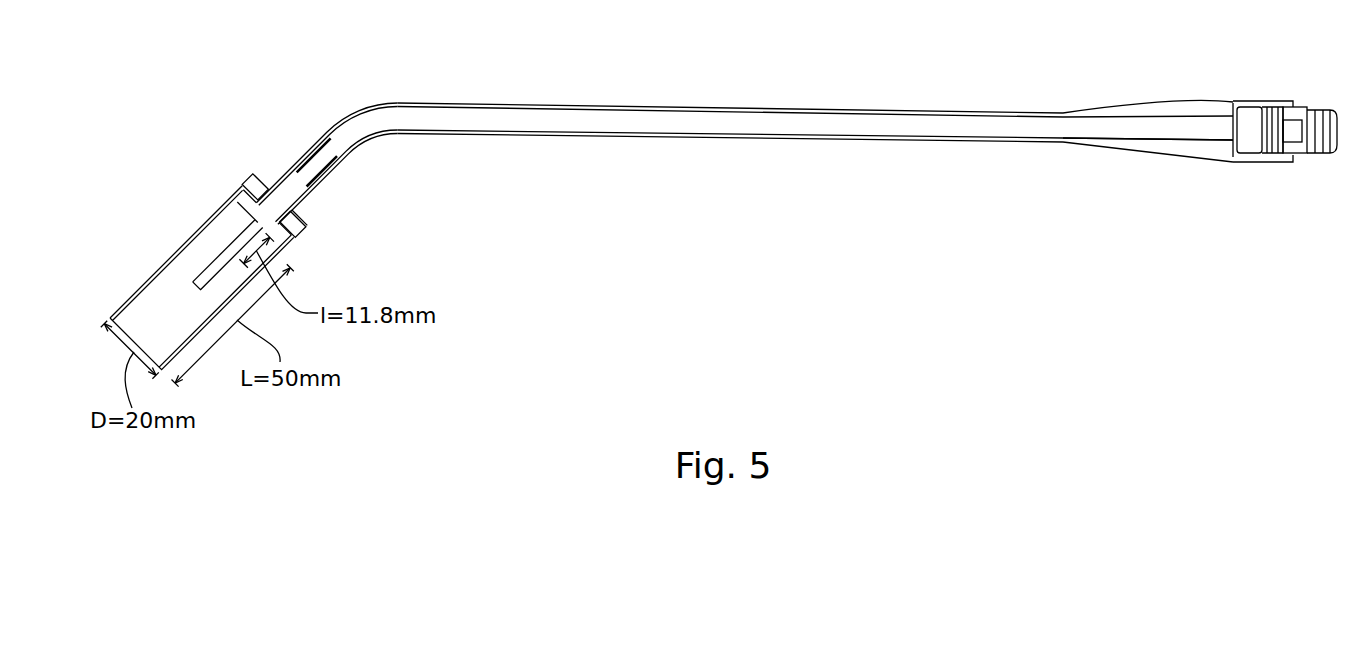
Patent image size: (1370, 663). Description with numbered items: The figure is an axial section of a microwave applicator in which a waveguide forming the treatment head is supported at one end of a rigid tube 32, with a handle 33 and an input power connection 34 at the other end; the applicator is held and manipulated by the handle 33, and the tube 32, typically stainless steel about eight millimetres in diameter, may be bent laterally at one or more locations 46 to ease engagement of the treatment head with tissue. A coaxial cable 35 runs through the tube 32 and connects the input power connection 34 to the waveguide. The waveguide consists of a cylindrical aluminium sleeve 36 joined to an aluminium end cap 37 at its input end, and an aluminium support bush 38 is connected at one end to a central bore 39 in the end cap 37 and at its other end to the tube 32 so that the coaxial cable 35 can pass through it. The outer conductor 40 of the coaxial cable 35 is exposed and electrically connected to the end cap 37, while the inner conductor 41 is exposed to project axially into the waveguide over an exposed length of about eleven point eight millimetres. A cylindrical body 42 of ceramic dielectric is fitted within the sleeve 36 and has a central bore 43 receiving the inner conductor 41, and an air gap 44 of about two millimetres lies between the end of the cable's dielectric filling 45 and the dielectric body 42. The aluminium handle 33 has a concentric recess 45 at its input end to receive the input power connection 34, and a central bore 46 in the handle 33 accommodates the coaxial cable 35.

The rigid tube 32 is at (554, 103).
The handle 33 is at (1172, 104).
The input power connection 34 is at (1300, 150).
The coaxial cable 35 is at (792, 127).
The cylindrical aluminium sleeve 36 is at (237, 205).
The aluminium end cap 37 is at (301, 232).
The aluminium support bush 38 is at (314, 194).
The central bore 39 is at (263, 198).
The outer conductor 40 is at (300, 233).
The inner conductor 41 is at (225, 250).
The cylindrical body of dielectric 42 is at (153, 305).
The central bore 43 is at (210, 280).
The air gap 44 is at (240, 205).
The concentric recess 45 is at (1238, 103).
The central bore 46 is at (1145, 142).